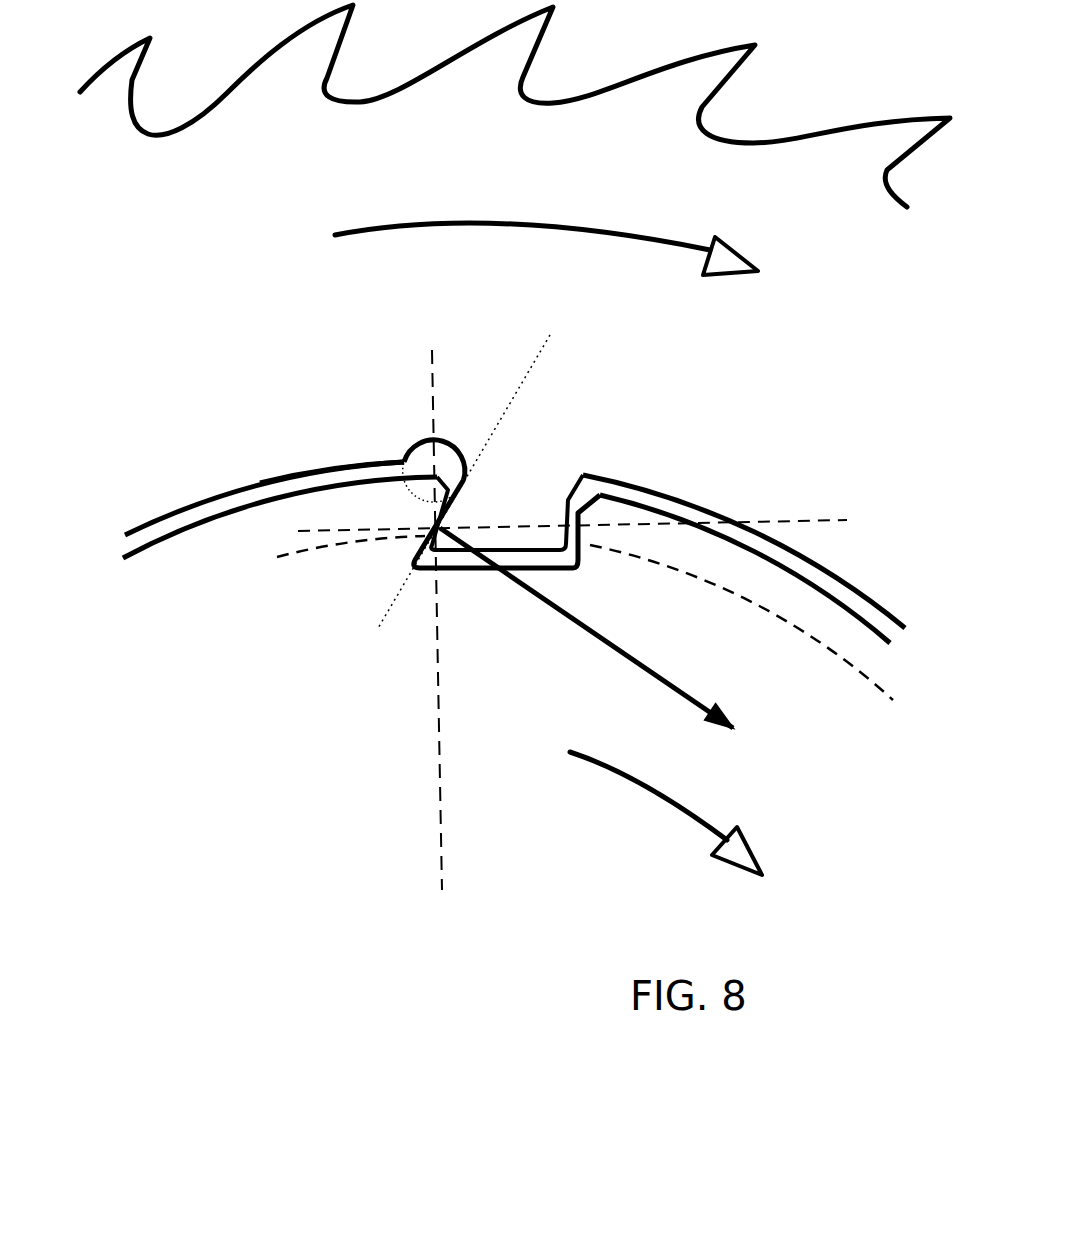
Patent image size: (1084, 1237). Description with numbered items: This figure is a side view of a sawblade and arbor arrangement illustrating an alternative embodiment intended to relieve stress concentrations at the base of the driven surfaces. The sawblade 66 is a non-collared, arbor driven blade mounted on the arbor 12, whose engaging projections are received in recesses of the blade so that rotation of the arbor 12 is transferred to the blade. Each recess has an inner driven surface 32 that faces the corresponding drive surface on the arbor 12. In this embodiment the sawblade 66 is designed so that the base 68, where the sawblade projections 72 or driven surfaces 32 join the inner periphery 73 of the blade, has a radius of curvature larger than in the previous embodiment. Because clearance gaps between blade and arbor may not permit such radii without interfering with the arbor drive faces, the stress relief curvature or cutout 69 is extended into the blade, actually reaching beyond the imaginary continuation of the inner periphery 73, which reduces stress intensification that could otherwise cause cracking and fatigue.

The arbor 12 is at (287, 790).
The inner driven surface 32 is at (433, 510).
The sawblade 66 is at (737, 425).
The base 68 is at (450, 455).
The stress relief curvature or cutout 69 is at (462, 452).
The sawblade projection 72 is at (485, 548).
The inner periphery 73 is at (330, 470).